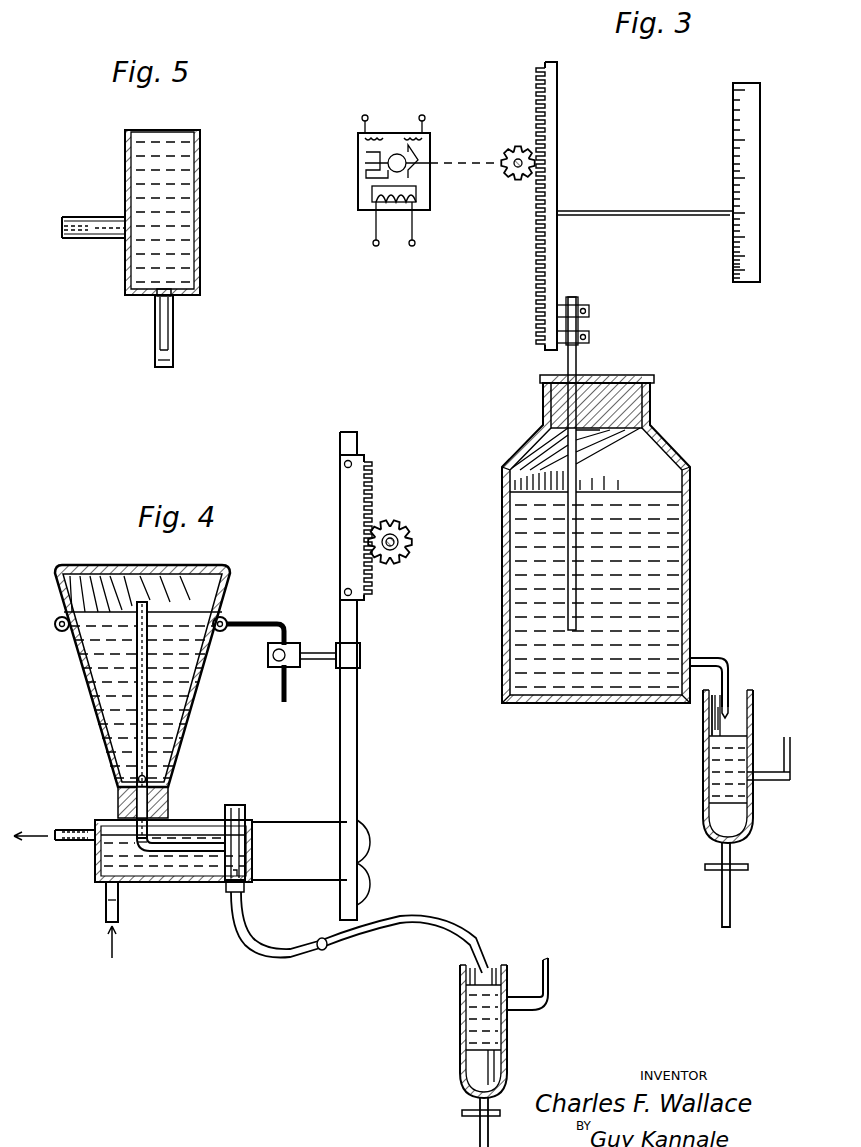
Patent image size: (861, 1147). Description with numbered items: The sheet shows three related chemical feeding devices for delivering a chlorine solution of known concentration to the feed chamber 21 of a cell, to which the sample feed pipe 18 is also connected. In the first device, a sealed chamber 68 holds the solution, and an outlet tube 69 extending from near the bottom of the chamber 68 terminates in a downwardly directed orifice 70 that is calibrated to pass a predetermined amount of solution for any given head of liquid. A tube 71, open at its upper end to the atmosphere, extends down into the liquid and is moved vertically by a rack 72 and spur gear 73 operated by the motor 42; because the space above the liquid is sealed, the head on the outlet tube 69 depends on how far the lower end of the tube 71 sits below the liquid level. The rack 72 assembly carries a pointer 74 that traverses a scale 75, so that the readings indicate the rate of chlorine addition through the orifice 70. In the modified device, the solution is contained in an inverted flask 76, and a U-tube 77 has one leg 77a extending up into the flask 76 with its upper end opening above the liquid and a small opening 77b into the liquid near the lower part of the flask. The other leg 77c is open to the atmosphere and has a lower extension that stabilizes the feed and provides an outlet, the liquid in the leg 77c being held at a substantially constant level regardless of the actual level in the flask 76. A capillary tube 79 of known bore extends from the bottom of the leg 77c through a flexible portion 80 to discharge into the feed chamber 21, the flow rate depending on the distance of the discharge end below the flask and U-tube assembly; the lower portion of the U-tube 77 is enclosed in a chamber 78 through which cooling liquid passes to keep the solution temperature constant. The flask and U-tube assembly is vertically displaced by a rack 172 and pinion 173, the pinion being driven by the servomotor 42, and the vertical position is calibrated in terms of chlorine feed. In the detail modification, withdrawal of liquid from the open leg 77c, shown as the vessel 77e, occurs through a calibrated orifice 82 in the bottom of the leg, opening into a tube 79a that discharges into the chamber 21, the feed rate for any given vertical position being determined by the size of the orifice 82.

In FIG. 3, the motor 42 is at (392, 132).
In FIG. 3, the spur gear 73 is at (513, 146).
In FIG. 3, the rack 72 is at (548, 264).
In FIG. 3, the pointer 74 is at (626, 210).
In FIG. 3, the scale 75 is at (757, 166).
In FIG. 3, the tube 71 is at (578, 352).
In FIG. 3, the sealed chamber 68 is at (690, 508).
In FIG. 3, the outlet tube 69 is at (716, 656).
In FIG. 3, the orifice 70 is at (730, 704).
In FIG. 3, the feed chamber 21 is at (742, 820).
In FIG. 4, the feed chamber 21 is at (488, 1064).
In FIG. 4, the inverted flask 76 is at (212, 565).
In FIG. 4, the U-tube leg 77a is at (148, 695).
In FIG. 4, the small opening 77b is at (146, 776).
In FIG. 4, the U-tube 77 is at (188, 842).
In FIG. 5, the U-tube 77 is at (76, 218).
In FIG. 4, the U-tube leg 77c is at (240, 814).
In FIG. 4, the chamber 78 is at (96, 862).
In FIG. 4, the capillary tube 79 is at (238, 912).
In FIG. 4, the flexible portion 80 is at (338, 940).
In FIG. 4, the rack 172 is at (357, 494).
In FIG. 4, the pinion 173 is at (408, 540).
In FIG. 4, the sample feed pipe 18 is at (550, 972).
In FIG. 5, the cup 77e is at (126, 153).
In FIG. 5, the calibrated orifice 82 is at (164, 290).
In FIG. 5, the tube 79a is at (174, 326).